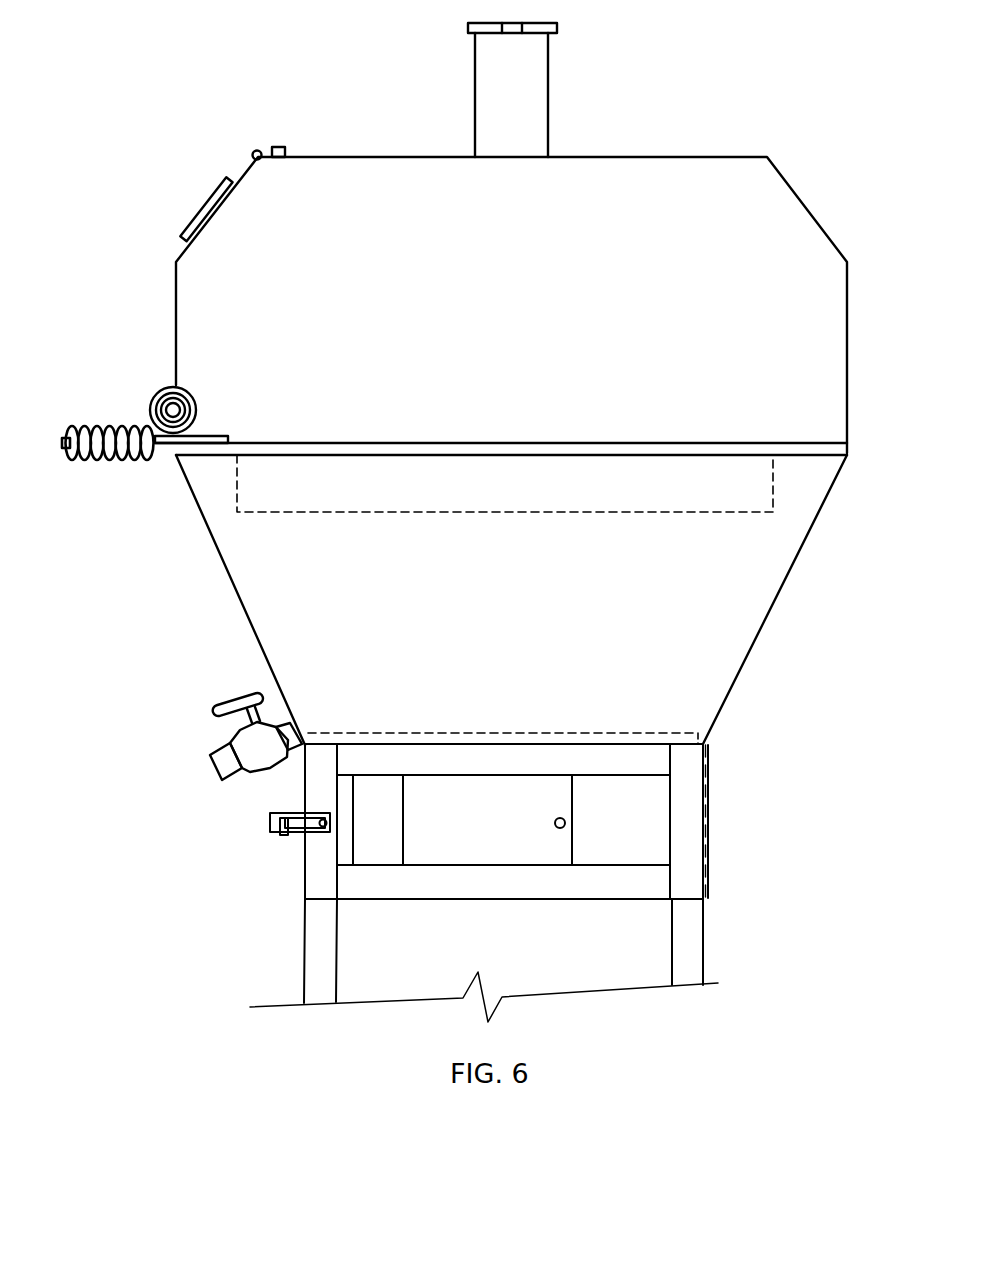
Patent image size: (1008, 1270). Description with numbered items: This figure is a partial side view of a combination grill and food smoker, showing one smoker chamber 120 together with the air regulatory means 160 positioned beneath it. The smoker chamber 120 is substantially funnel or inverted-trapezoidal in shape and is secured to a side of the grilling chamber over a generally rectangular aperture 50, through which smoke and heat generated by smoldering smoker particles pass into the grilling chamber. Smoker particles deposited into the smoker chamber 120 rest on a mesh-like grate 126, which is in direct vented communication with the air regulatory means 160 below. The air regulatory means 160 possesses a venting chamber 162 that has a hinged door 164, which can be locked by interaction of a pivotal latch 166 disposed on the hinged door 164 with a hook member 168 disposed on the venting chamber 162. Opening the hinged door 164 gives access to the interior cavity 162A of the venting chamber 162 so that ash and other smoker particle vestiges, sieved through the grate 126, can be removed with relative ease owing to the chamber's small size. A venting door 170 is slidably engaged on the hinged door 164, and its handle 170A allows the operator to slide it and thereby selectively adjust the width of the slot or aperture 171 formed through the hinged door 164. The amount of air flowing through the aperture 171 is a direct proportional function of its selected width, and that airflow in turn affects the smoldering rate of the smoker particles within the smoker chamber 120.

The aperture 50 is at (735, 496).
The smoker chamber 120 is at (690, 703).
The mesh-like grate 126 is at (594, 725).
The air regulatory means 160 is at (706, 883).
The venting chamber 162 is at (310, 867).
The interior cavity 162A is at (366, 858).
The hinged door 164 is at (665, 825).
The pivotal latch 166 is at (295, 817).
The hook member 168 is at (285, 835).
The venting door 170 is at (457, 790).
The handle 170A is at (553, 823).
The aperture 171 is at (370, 820).